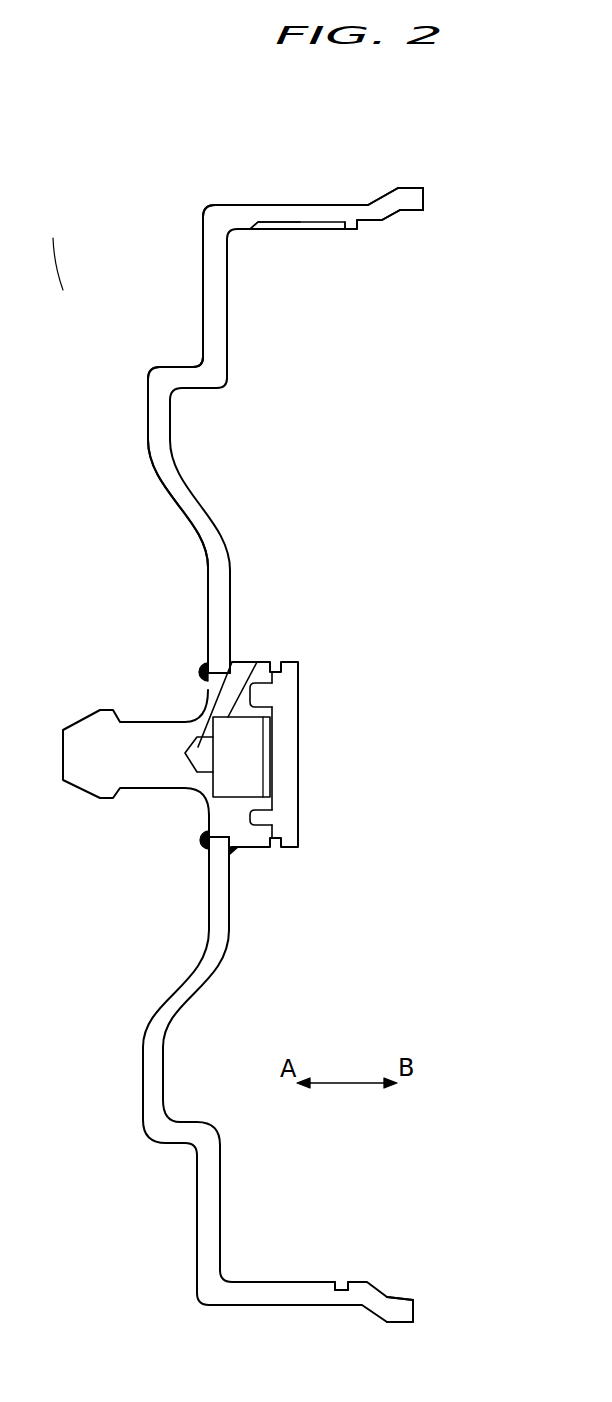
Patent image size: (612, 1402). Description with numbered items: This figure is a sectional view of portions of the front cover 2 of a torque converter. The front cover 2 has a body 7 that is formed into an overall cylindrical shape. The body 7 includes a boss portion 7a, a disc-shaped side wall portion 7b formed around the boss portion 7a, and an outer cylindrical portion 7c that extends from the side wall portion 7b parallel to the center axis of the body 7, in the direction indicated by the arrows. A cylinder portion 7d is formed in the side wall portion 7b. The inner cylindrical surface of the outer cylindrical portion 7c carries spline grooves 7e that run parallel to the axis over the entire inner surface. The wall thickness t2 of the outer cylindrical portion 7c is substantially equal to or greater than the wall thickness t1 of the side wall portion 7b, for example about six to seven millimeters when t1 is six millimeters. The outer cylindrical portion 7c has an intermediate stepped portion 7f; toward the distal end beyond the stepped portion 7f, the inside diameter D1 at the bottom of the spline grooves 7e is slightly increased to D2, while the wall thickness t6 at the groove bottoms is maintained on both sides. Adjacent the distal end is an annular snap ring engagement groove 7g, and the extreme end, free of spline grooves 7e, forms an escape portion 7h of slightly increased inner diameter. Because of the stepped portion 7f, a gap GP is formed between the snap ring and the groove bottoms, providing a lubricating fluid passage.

The front cover 2 is at (60, 234).
The body 7 is at (195, 515).
The boss portion 7a is at (68, 730).
The side wall portion 7b is at (147, 410).
The outer cylindrical portion 7c is at (228, 204).
The cylinder portion 7d is at (178, 365).
The spline grooves 7e is at (325, 233).
The stepped portion 7f is at (350, 204).
The snap ring engagement groove 7g is at (338, 235).
The escape portion 7h is at (421, 200).
The gap GP is at (362, 205).
The wall thickness of side wall portion t1 is at (178, 333).
The wall thickness of outer cylindrical portion t2 is at (280, 229).
The wall thickness at bottom of spline grooves t6 is at (312, 305).
The inside diameter D1 is at (312, 229).
The increased inside diameter D2 is at (370, 220).